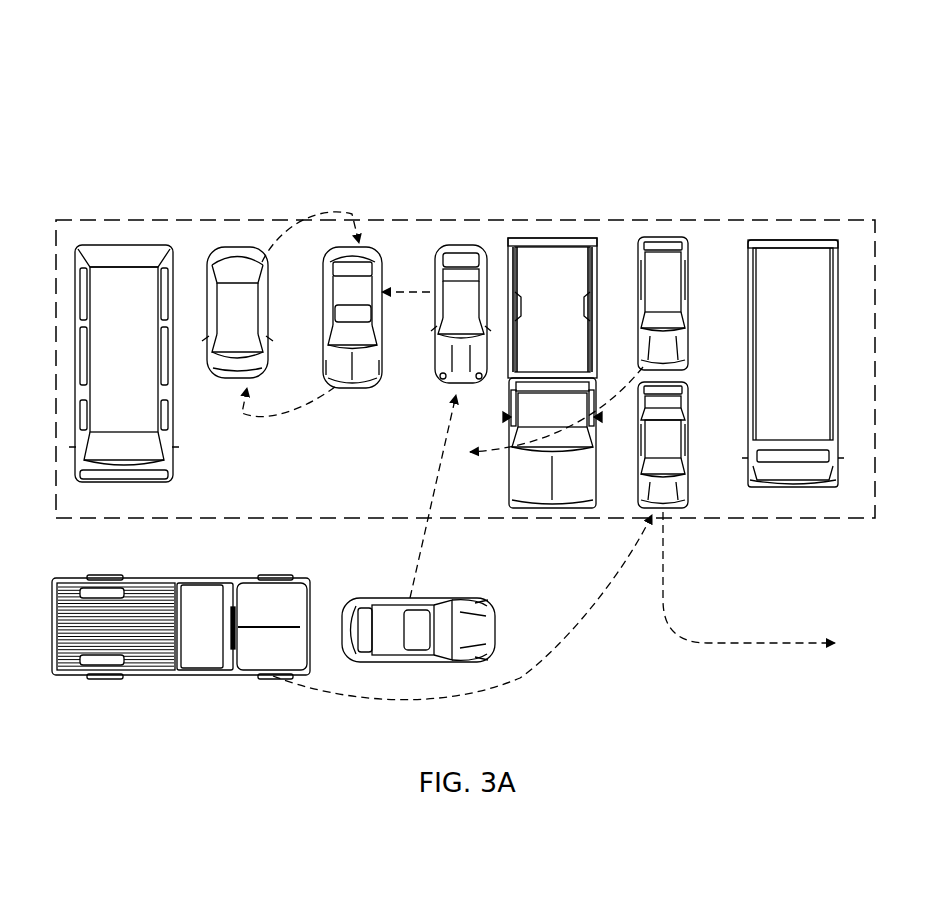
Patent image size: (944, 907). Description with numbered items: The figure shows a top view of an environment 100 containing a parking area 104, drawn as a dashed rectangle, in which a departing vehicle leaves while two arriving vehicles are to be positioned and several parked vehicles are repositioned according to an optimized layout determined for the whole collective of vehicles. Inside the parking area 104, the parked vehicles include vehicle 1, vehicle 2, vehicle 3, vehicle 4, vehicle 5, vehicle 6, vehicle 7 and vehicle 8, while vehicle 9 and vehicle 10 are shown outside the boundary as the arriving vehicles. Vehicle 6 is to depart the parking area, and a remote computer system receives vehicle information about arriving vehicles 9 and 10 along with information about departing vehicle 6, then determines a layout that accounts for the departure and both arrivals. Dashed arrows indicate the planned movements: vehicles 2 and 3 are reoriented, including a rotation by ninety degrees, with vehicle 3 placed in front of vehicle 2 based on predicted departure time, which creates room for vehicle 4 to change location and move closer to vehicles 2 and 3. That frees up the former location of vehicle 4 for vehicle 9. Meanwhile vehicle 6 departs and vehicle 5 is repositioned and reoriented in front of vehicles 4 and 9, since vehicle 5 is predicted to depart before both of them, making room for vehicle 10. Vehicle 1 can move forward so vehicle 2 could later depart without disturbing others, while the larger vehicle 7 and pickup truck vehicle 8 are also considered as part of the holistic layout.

The environment 100 is at (722, 96).
The parking area 104 is at (700, 219).
The vehicle 1 is at (116, 354).
The vehicle 2 is at (236, 317).
The vehicle 3 is at (345, 300).
The vehicle 4 is at (451, 316).
The vehicle 5 is at (656, 300).
The departing vehicle 6 is at (656, 452).
The vehicle 7 is at (786, 357).
The vehicle 8 is at (544, 322).
The arriving vehicle 9 is at (381, 642).
The arriving vehicle 10 is at (192, 636).